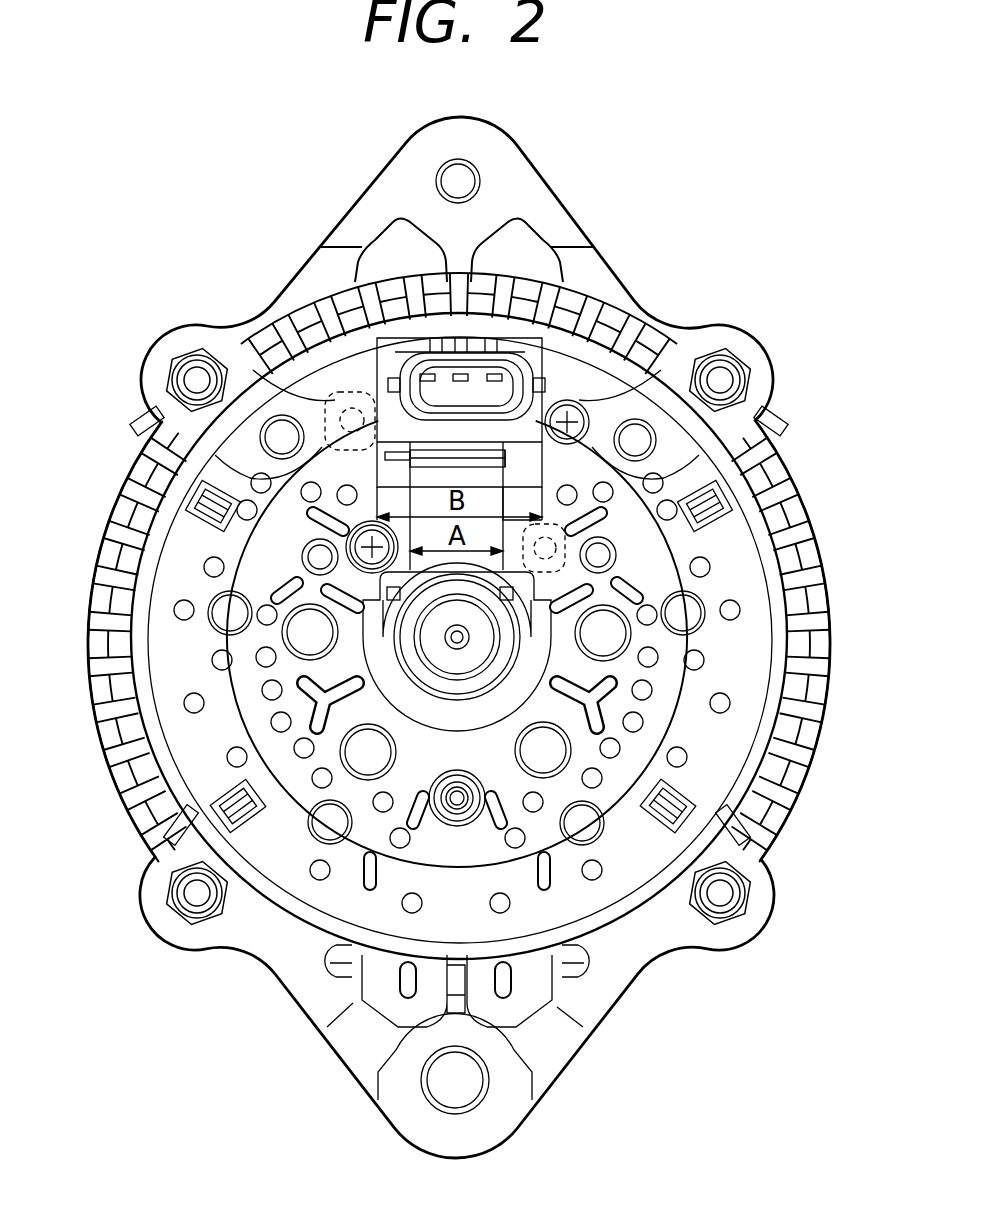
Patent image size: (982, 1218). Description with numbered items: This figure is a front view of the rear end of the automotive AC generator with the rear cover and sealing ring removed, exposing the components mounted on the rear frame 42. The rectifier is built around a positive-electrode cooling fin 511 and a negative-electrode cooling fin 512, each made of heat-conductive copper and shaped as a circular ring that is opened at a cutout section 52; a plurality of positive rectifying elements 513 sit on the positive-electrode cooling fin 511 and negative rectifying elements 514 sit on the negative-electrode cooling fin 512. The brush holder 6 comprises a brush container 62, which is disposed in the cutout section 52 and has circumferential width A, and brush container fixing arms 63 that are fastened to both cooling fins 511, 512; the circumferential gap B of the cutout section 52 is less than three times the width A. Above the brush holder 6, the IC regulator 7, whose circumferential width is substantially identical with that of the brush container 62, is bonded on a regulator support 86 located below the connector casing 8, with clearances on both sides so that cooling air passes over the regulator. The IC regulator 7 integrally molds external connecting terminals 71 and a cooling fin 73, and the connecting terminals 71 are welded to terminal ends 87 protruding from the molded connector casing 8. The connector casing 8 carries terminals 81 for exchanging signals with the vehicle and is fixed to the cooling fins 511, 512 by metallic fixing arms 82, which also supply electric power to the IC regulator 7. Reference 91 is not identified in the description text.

The brush holder 6 is at (423, 562).
The IC regulator 7 is at (514, 467).
The connector casing 8 is at (393, 343).
The rear frame 42 is at (603, 997).
The cutout section 52 is at (346, 547).
The brush container 62 is at (520, 533).
The brush container fixing arms 63 is at (303, 566).
The external connecting terminals 71 is at (383, 452).
The cooling fin 73 is at (410, 465).
The terminals 81 is at (497, 367).
The fixing arms 82 is at (335, 440).
The regulator support 86 is at (345, 405).
The terminal ends 87 is at (268, 388).
The rear cover 91 is at (363, 662).
The positive-electrode cooling fin 511 is at (317, 907).
The negative-electrode cooling fin 512 is at (413, 853).
The positive rectifying elements 513 is at (690, 627).
The negative rectifying elements 514 is at (350, 752).